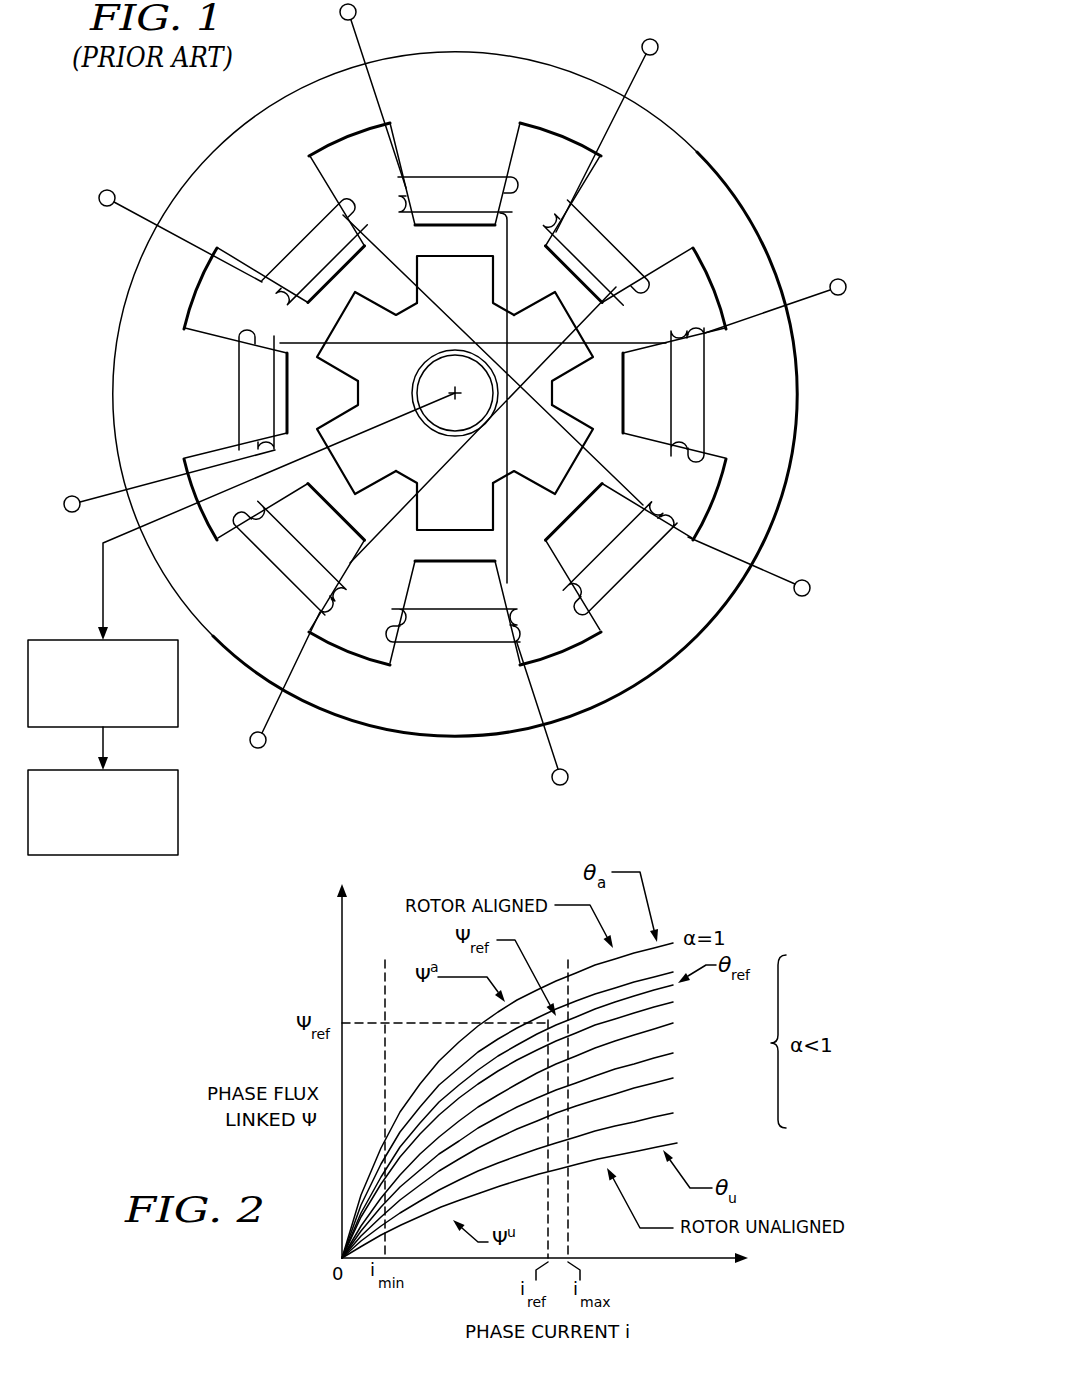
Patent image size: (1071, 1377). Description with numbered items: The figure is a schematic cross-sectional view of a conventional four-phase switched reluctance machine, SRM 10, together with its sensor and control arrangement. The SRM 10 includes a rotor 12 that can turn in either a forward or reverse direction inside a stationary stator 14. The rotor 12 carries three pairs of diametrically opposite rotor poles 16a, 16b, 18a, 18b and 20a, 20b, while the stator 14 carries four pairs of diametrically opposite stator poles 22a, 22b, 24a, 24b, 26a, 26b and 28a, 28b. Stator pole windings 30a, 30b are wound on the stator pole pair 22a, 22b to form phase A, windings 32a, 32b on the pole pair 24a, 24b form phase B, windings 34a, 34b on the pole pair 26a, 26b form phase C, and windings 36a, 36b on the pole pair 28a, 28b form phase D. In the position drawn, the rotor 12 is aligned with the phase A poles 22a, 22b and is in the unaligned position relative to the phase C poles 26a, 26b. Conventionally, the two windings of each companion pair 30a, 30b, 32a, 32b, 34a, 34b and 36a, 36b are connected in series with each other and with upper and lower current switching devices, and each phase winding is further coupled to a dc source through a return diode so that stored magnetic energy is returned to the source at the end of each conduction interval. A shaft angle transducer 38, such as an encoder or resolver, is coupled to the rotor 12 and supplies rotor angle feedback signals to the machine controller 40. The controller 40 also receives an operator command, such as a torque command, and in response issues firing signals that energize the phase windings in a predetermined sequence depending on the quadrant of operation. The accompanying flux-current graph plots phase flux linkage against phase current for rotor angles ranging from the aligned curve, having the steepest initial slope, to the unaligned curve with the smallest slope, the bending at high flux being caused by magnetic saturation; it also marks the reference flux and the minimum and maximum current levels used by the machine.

The SRM 10 is at (761, 132).
The rotor 12 is at (603, 445).
The stator 14 is at (226, 126).
The rotor pole 16a is at (382, 336).
The rotor pole 16b is at (567, 466).
The rotor pole 18a is at (389, 471).
The rotor pole 18b is at (567, 332).
The rotor pole 20a is at (479, 522).
The rotor pole 20b is at (479, 286).
The stator pole 22a is at (475, 679).
The stator pole 22b is at (474, 166).
The stator pole 24a is at (652, 231).
The stator pole 24b is at (272, 597).
The stator pole 26a is at (217, 401).
The stator pole 26b is at (757, 404).
The stator pole 28a is at (674, 601).
The stator pole 28b is at (292, 232).
The stator pole winding 30a is at (358, 16).
The stator pole winding 30b is at (558, 748).
The stator pole winding 32a is at (638, 70).
The stator pole winding 32b is at (276, 723).
The stator pole winding 34a is at (826, 300).
The stator pole winding 34b is at (84, 496).
The stator pole winding 36a is at (798, 581).
The stator pole winding 36b is at (125, 216).
The shaft angle transducer 38 is at (62, 640).
The controller 40 is at (100, 856).